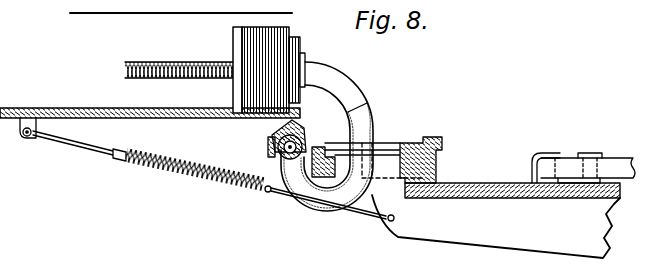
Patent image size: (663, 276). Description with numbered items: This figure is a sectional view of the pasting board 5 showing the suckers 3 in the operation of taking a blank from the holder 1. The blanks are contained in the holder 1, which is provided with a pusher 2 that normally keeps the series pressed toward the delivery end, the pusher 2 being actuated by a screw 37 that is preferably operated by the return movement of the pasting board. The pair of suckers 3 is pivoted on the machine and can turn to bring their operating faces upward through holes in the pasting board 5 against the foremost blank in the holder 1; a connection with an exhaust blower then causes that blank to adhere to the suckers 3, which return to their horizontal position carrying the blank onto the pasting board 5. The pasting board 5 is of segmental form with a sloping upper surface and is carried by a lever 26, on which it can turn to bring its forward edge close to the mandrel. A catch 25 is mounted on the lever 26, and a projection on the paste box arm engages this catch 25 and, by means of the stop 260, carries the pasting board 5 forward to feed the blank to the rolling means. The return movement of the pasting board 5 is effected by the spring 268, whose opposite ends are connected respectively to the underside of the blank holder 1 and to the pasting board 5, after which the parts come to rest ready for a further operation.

The holder 1 is at (92, 108).
The pusher 2 is at (235, 42).
The suckers 3 is at (302, 55).
The pasting board 5 is at (408, 142).
The catch 25 is at (606, 158).
The lever 26 is at (496, 220).
The screw 37 is at (159, 62).
The stop 260 is at (538, 153).
The spring 268 is at (213, 176).